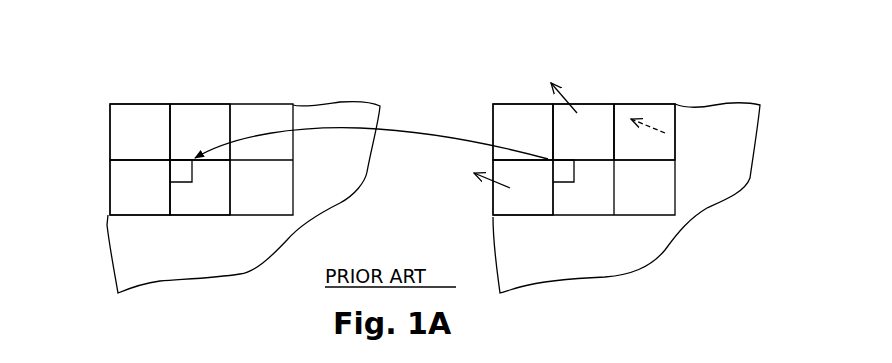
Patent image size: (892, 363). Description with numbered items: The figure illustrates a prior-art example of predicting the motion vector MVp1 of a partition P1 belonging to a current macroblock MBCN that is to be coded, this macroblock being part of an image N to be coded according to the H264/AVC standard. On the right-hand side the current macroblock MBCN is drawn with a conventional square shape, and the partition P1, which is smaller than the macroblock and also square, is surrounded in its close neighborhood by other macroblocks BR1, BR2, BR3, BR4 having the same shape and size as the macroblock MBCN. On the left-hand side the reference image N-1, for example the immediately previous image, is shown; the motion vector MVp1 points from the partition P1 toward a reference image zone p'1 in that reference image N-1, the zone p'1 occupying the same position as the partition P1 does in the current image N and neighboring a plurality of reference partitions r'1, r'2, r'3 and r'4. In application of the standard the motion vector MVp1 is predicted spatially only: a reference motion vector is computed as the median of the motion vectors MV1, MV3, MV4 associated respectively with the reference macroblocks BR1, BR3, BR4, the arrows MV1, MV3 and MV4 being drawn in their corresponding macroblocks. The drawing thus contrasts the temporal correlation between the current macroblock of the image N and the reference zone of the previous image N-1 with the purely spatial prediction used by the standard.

The reference partition r'3 is at (139, 107).
The reference partition r'4 is at (203, 107).
The reference partition r'2 is at (107, 187).
The reference partition r'1 is at (200, 218).
The reference image zone p'1 is at (186, 126).
The reference image N-1 is at (141, 284).
The image to be coded N is at (730, 105).
The motion vector MVp1 is at (428, 137).
The current macroblock MBCN is at (602, 220).
The reference macroblock BR1 is at (517, 203).
The reference macroblock BR2 is at (518, 120).
The reference macroblock BR3 is at (602, 123).
The reference macroblock BR4 is at (628, 108).
The partition P1 is at (567, 176).
The motion vector MV1 is at (510, 188).
The motion vector MV3 is at (568, 100).
The motion vector MV4 is at (652, 122).